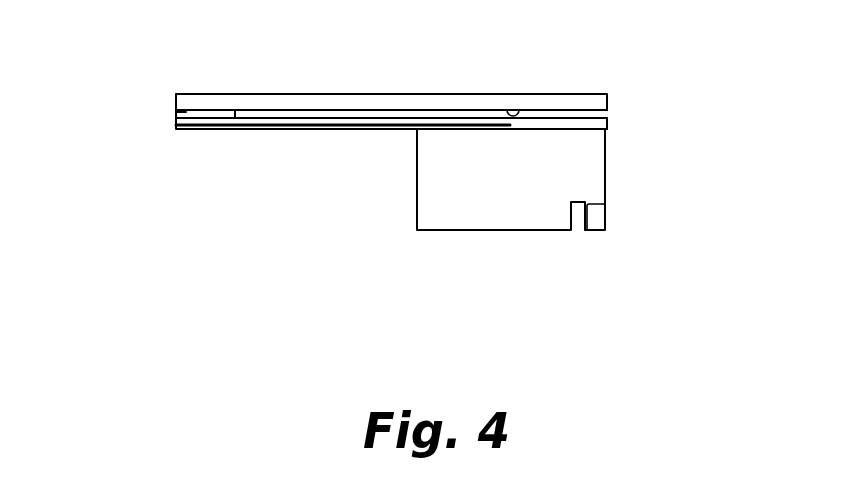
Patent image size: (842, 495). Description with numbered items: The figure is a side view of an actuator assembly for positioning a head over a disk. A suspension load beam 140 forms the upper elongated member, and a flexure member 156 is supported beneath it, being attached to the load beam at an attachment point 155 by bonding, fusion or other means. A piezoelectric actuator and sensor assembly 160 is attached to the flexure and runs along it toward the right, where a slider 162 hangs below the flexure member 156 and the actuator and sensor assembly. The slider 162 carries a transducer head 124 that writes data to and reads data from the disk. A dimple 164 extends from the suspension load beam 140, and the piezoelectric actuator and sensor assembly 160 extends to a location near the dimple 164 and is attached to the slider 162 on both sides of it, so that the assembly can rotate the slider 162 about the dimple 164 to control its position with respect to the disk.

The suspension load beam 140 is at (563, 96).
The attachment point 155 is at (177, 112).
The flexure member 156 is at (607, 121).
The piezoelectric actuator and sensor assembly 160 is at (207, 129).
The slider 162 is at (605, 163).
The dimple 164 is at (512, 109).
The transducer head 124 is at (605, 216).